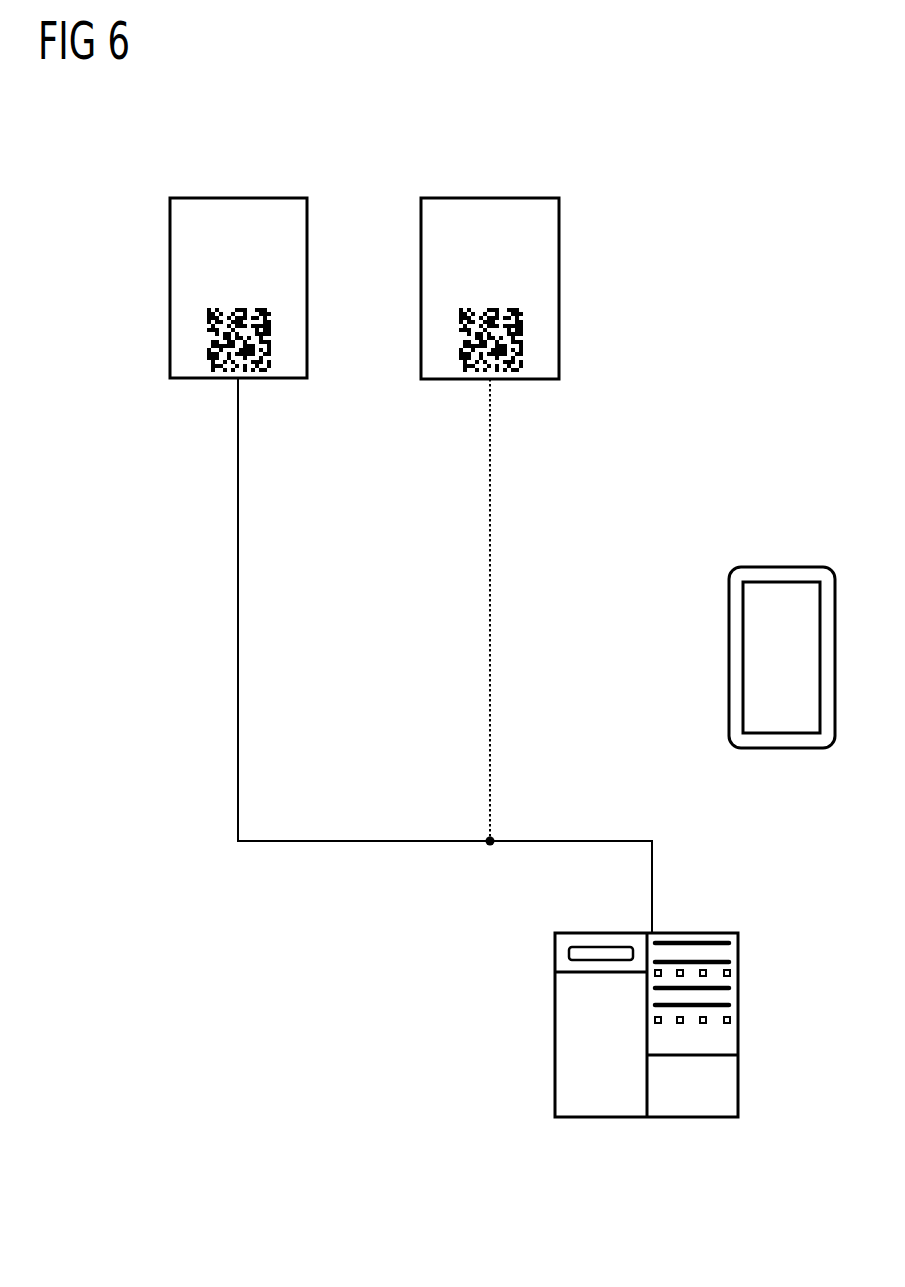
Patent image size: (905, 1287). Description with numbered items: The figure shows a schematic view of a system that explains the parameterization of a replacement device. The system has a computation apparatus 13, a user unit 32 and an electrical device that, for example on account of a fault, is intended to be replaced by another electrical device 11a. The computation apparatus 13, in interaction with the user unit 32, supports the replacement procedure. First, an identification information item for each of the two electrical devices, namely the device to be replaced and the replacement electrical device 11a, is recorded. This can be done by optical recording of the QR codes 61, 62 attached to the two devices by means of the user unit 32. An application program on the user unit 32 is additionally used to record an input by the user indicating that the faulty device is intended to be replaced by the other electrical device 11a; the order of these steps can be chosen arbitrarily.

The electrical device 11a is at (238, 198).
The QR code 61 is at (270, 345).
The QR code 62 is at (522, 345).
The user unit 32 is at (782, 565).
The computation apparatus 13 is at (637, 1120).